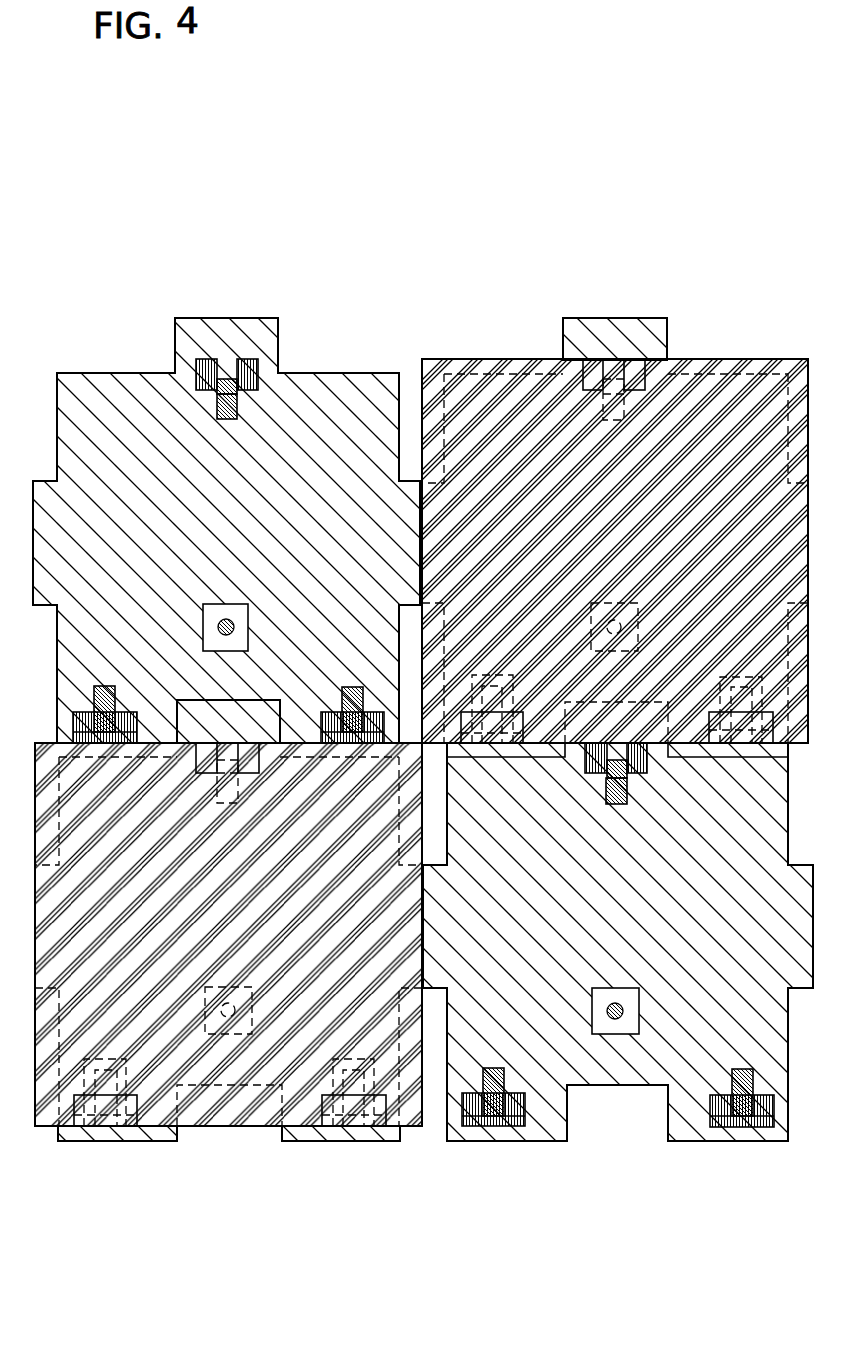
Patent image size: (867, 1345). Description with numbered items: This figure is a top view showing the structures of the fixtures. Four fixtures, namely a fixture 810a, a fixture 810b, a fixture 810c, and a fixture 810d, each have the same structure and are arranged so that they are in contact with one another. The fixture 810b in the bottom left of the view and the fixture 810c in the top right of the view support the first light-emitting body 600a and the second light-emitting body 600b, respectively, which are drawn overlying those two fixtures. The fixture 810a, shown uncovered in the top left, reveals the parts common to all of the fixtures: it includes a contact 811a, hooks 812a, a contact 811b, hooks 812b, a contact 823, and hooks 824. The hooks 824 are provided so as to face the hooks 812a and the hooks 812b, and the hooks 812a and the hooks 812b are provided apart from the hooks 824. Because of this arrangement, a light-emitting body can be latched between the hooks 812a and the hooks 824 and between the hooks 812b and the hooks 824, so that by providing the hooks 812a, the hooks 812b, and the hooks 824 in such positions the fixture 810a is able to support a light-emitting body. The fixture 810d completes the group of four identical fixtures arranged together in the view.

The fixture 810a is at (130, 419).
The fixture 810b is at (165, 1132).
The fixture 810c is at (638, 342).
The fixture 810d is at (523, 801).
The first light-emitting body 600a is at (253, 946).
The second light-emitting body 600b is at (643, 564).
The contact 811a is at (103, 686).
The contact 811b is at (350, 687).
The hooks 812a is at (85, 743).
The hooks 812b is at (335, 743).
The contact 823 is at (233, 420).
The hooks 824 is at (205, 357).